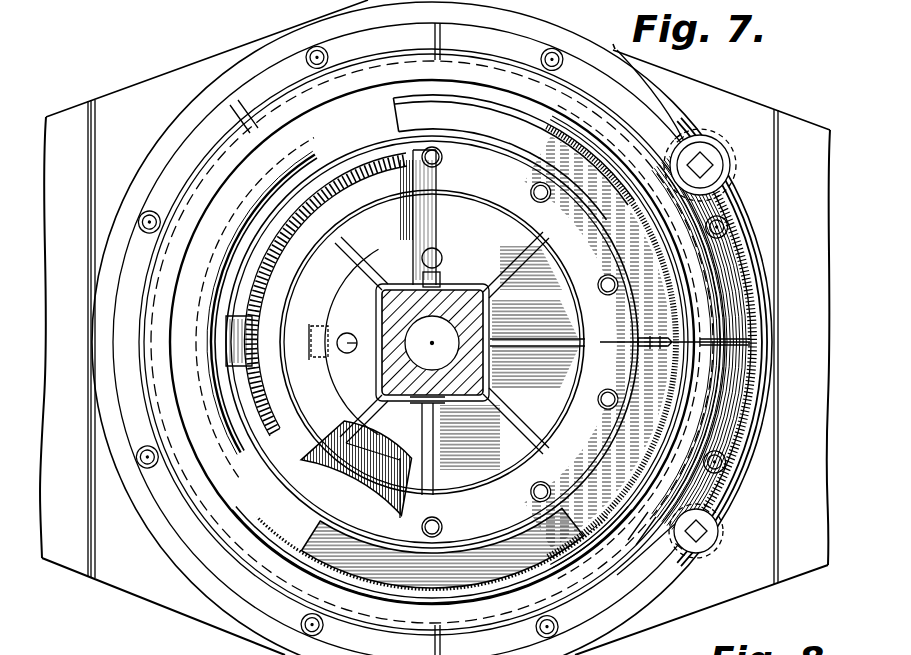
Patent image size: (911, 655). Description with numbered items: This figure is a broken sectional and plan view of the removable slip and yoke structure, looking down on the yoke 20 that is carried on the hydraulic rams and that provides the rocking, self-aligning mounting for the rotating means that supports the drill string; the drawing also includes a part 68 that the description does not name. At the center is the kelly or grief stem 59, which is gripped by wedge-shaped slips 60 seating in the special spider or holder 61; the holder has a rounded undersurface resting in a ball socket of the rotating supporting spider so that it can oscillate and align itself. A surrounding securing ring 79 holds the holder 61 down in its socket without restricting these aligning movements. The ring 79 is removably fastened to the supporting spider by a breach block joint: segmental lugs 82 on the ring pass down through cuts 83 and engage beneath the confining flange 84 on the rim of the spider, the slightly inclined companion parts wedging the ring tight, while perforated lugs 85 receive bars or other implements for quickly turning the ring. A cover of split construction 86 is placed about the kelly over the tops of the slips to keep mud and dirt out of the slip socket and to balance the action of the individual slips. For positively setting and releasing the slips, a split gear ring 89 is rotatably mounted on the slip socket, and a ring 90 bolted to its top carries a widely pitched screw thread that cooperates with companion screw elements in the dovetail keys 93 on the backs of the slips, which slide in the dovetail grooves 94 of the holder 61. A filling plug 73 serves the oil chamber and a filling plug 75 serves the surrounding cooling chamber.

The yoke 20 is at (139, 86).
The kelly or grief stem 59 is at (475, 316).
The wedge-shaped slips 60 is at (353, 283).
The spider or holder 61 is at (345, 408).
The flange ring 68 is at (174, 548).
The filling plug 73 is at (712, 150).
The filling plug 75 is at (704, 540).
The securing ring 79 is at (344, 445).
The segmental lugs 82 is at (342, 165).
The cuts 83 is at (245, 200).
The confining flange 84 is at (390, 112).
The perforated lugs 85 is at (262, 322).
The split cover 86 is at (450, 342).
The split gear ring 89 is at (412, 592).
The screw ring 90 is at (428, 182).
The dovetail keys 93 is at (308, 335).
The dovetail grooves 94 is at (310, 358).